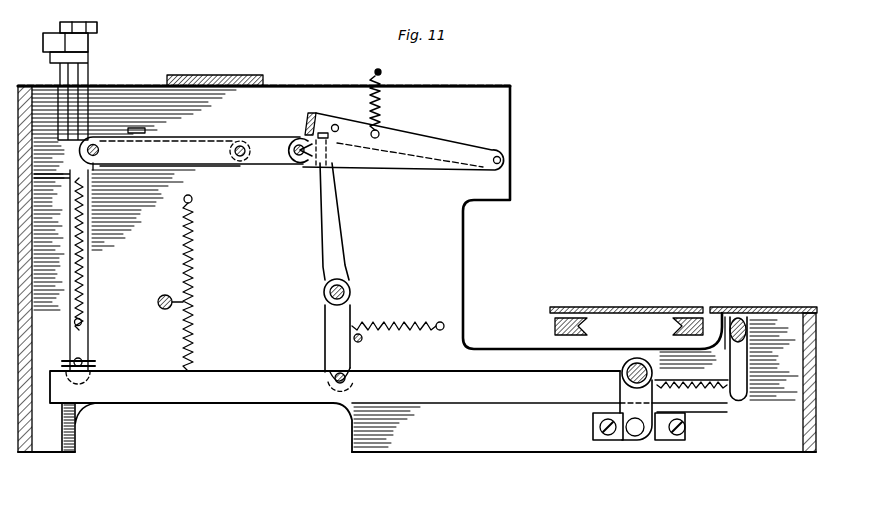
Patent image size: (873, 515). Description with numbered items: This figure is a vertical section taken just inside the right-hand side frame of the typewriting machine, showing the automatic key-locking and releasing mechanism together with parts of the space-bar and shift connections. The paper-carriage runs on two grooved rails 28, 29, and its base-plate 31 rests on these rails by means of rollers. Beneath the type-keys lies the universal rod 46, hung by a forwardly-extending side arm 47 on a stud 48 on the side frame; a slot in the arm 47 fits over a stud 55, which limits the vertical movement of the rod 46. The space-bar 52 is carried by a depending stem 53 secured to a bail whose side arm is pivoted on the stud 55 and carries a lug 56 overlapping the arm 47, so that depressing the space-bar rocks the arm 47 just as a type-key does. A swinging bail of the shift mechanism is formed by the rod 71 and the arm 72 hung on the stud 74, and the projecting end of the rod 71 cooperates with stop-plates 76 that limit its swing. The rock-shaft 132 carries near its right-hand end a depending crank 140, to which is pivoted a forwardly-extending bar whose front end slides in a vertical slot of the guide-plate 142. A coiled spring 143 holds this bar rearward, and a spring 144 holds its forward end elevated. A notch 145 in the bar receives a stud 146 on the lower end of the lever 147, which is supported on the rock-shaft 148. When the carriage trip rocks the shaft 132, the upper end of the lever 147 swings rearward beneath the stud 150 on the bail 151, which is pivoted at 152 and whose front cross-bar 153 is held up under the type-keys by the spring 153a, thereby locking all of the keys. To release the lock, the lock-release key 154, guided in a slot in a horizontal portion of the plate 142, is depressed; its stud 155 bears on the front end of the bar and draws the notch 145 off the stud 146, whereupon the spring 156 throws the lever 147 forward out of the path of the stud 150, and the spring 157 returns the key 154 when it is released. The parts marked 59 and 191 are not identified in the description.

The space-bar 52 is at (52, 38).
The lock-release key 154 is at (92, 25).
The vertically-depending stem 53 is at (60, 72).
The outwardly-projecting lug 56 is at (133, 128).
The stud 48 is at (99, 150).
The lever edge 59 is at (163, 170).
The stud 55 is at (235, 162).
The side arm 47 is at (272, 162).
The universal rod 46 is at (300, 160).
The front cross-bar 153 is at (308, 123).
The spring 153a is at (382, 72).
The stud 150 is at (338, 130).
The bail 151 is at (408, 128).
The pivot 152 is at (505, 160).
The lever 147 is at (330, 240).
The rock-shaft 148 is at (326, 295).
The stud 146 is at (350, 380).
The notch 145 is at (345, 372).
The spring 156 is at (402, 326).
The spring 144 is at (194, 345).
The spring 157 is at (85, 285).
The stud 155 is at (85, 362).
The base plate 191 is at (388, 411).
The guide-plate 142 is at (67, 447).
The base-plate 31 is at (624, 307).
The grooved rail 28 is at (555, 328).
The grooved rail 29 is at (673, 326).
The rock-shaft 132 is at (741, 325).
The depending arm 140 is at (748, 360).
The arm 72 is at (622, 390).
The stud 74 is at (628, 373).
The coiled spring 143 is at (708, 392).
The stop-plate 76 is at (608, 441).
The rod 71 is at (634, 437).